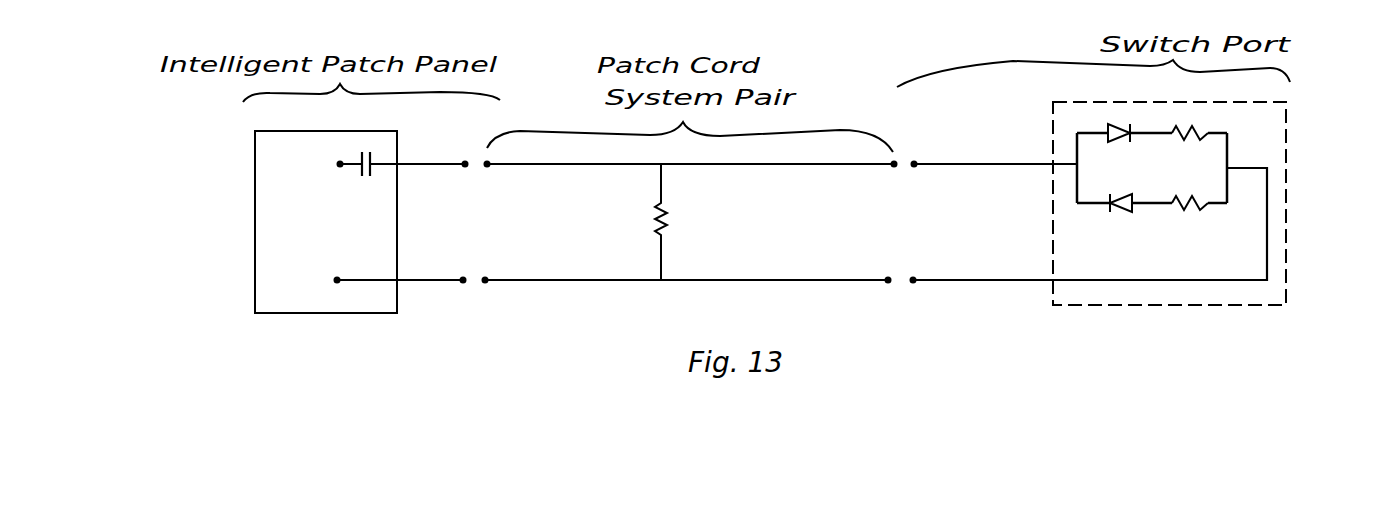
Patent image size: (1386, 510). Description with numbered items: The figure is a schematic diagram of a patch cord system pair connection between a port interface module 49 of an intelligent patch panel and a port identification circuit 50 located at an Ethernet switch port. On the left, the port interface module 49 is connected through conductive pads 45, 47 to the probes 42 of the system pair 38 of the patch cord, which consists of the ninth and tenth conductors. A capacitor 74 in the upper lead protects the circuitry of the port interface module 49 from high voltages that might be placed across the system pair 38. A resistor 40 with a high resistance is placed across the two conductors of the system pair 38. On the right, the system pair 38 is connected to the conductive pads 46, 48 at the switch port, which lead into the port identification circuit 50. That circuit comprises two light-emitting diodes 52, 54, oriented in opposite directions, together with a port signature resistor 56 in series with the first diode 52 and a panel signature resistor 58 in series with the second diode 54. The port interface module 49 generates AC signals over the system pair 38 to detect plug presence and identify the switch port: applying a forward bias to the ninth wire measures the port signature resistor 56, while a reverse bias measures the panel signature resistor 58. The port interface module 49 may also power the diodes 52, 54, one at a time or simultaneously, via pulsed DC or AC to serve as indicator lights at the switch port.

The system pair 38 is at (598, 291).
The resistor 40 is at (665, 218).
The probes 42 is at (486, 279).
The conductive pad 45 is at (465, 167).
The conductive pad 46 is at (914, 168).
The conductive pad 47 is at (463, 283).
The conductive pad 48 is at (913, 284).
The port interface module 49 is at (340, 315).
The port identification circuit 50 is at (1199, 233).
The light-emitting diode 52 is at (1118, 143).
The light-emitting diode 54 is at (1130, 215).
The port signature resistor 56 is at (1200, 145).
The panel signature resistor 58 is at (1205, 192).
The capacitor 74 is at (375, 153).